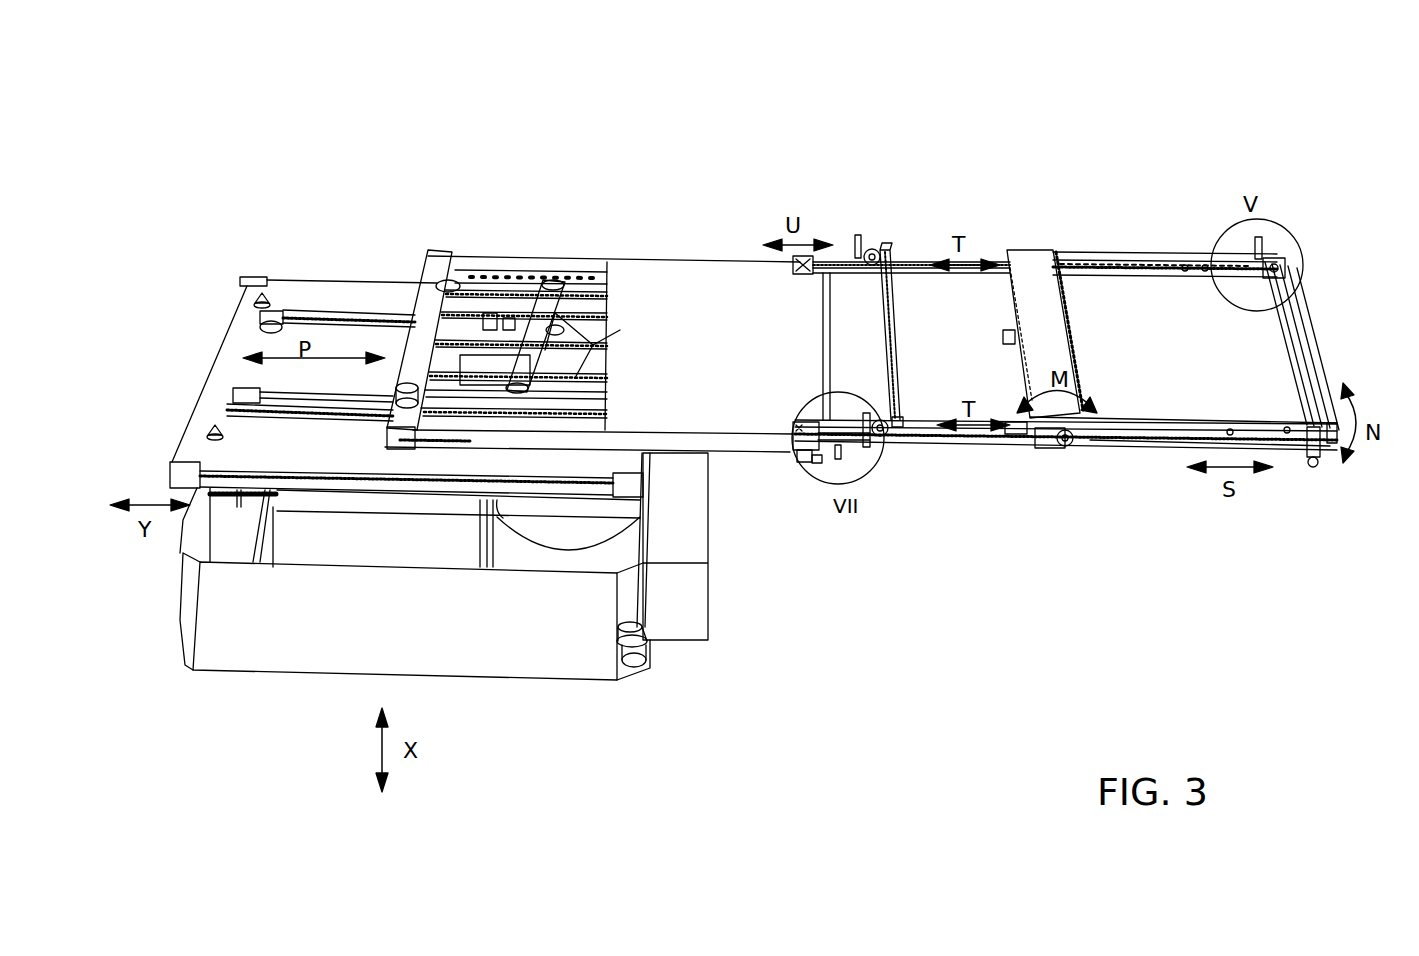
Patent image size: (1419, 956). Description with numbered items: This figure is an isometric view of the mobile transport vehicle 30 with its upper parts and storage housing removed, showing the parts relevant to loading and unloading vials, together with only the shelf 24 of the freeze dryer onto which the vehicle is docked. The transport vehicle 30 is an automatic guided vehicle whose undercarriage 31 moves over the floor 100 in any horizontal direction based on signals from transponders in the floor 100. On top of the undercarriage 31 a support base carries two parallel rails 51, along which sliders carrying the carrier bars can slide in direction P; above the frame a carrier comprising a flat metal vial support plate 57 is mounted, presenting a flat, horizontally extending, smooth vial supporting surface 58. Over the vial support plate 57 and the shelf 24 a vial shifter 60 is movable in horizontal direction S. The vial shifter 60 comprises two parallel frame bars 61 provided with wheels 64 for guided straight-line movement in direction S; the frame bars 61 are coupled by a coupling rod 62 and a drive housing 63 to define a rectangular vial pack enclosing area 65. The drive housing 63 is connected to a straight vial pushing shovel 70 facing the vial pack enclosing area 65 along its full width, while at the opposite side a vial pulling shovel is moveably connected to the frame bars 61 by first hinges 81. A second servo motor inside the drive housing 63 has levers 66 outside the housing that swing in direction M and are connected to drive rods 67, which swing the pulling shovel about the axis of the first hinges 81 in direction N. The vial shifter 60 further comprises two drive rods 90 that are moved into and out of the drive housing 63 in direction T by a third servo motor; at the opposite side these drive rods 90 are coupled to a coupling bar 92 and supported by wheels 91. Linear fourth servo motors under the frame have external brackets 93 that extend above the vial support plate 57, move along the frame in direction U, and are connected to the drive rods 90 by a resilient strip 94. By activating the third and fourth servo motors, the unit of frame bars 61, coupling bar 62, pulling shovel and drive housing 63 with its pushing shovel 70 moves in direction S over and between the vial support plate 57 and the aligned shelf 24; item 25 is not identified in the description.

The transport vehicle 30 is at (426, 183).
The undercarriage 31 is at (327, 613).
The rails 51 is at (333, 312).
The vial support plate 57 is at (607, 297).
The vial supporting surface 58 is at (652, 285).
The drive rods 90 is at (1037, 338).
The wheels 91 is at (870, 250).
The coupling bar 92 is at (893, 290).
The bracket 93 is at (793, 264).
The resilient strip 94 is at (840, 262).
The shelf 24 is at (942, 442).
The guide block 25 is at (1017, 448).
The vial shifter 60 is at (1186, 337).
The frame bars 61 is at (1153, 263).
The coupling rod 62 is at (1302, 327).
The drive housing 63 is at (1035, 272).
The wheels 64 is at (1205, 277).
The vial pack enclosing area 65 is at (1153, 378).
The lever 66 is at (1043, 450).
The drive rods 67 is at (1103, 258).
The vial pushing shovel 70 is at (1080, 262).
The first hinges 81 is at (1262, 247).
The floor 100 is at (577, 768).